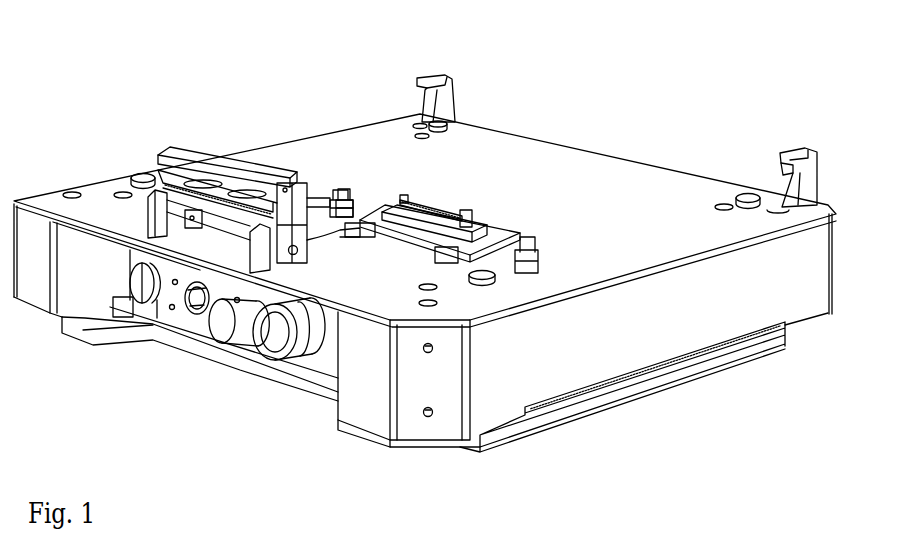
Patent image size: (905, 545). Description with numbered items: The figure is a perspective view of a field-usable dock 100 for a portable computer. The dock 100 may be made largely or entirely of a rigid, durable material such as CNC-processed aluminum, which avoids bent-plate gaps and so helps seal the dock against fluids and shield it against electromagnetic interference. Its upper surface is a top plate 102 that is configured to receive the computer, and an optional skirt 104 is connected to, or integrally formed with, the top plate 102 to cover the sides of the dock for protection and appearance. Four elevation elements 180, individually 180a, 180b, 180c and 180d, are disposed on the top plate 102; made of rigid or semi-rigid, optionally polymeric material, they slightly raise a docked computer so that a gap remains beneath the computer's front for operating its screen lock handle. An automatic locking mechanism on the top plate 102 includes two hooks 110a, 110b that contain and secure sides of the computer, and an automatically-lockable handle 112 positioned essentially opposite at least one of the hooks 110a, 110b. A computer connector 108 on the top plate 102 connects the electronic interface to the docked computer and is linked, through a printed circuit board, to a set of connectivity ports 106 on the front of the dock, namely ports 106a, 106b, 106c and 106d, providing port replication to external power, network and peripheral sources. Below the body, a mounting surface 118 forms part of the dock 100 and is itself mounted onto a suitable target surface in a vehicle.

The dock 100 is at (604, 60).
The top plate 102 is at (505, 175).
The skirt 104 is at (797, 314).
The connectivity ports 106 is at (162, 313).
The connectivity port 106a is at (138, 288).
The connectivity port 106b is at (195, 308).
The connectivity port 106c is at (228, 328).
The connectivity port 106d is at (280, 352).
The computer connector 108 is at (433, 192).
The hook 110a is at (451, 77).
The hook 110b is at (790, 150).
The automatically-lockable handle 112 is at (262, 152).
The mounting surface 118 is at (597, 405).
The elevation elements 180 is at (532, 185).
The elevation element 180a is at (443, 120).
The elevation element 180b is at (741, 211).
The elevation element 180c is at (145, 171).
The elevation element 180d is at (492, 289).